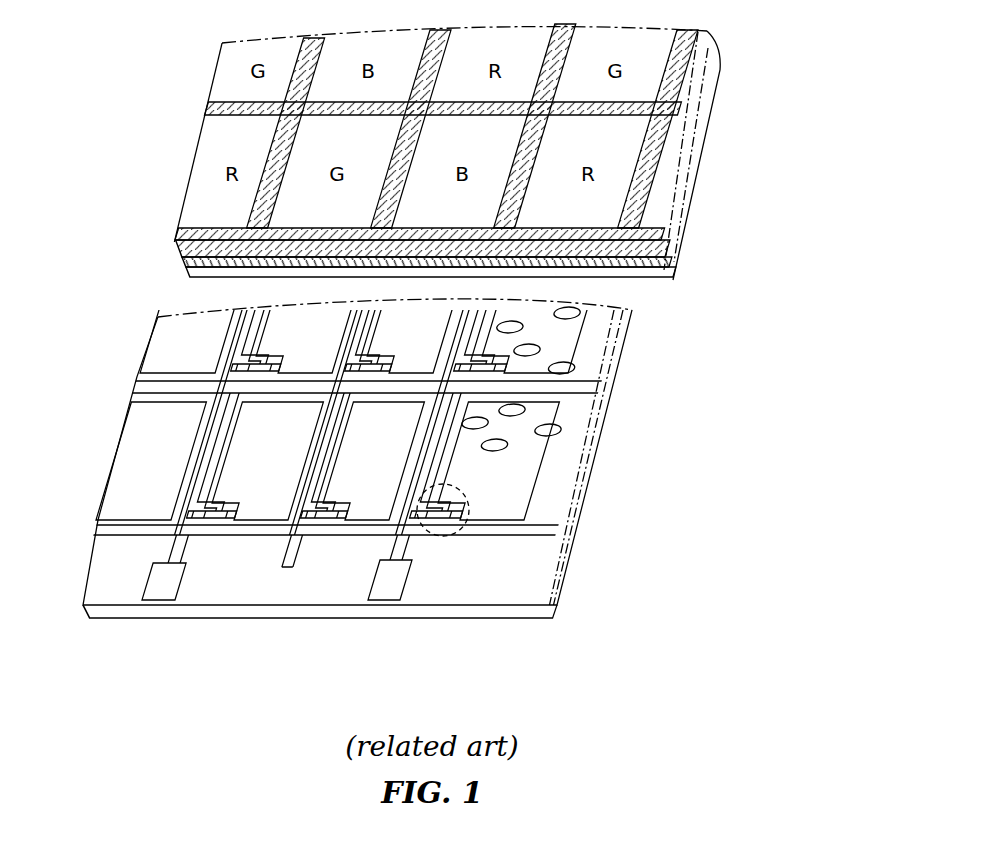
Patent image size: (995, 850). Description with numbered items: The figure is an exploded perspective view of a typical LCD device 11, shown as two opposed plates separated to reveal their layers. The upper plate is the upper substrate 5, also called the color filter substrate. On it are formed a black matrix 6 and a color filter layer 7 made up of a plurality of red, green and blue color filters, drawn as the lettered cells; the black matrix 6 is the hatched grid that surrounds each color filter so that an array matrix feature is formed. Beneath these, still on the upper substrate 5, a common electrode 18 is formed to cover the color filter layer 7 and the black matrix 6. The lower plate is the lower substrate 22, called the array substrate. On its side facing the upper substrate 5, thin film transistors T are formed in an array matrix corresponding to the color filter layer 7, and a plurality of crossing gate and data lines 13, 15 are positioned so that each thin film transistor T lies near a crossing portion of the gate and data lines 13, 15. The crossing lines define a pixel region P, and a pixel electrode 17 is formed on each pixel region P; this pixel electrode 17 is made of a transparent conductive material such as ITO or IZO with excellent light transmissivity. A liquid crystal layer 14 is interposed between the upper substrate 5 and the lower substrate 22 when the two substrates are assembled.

The upper substrate 5 is at (660, 246).
The black matrix 6 is at (698, 112).
The color filter layer 7 is at (647, 153).
The common electrode 18 is at (668, 270).
The LCD device 11 is at (710, 428).
The gate line 13 is at (533, 532).
The liquid crystal layer 14 is at (552, 366).
The data line 15 is at (396, 548).
The pixel electrode 17 is at (530, 498).
The lower substrate 22 is at (524, 612).
The pixel region P is at (558, 471).
The thin film transistor T is at (460, 537).